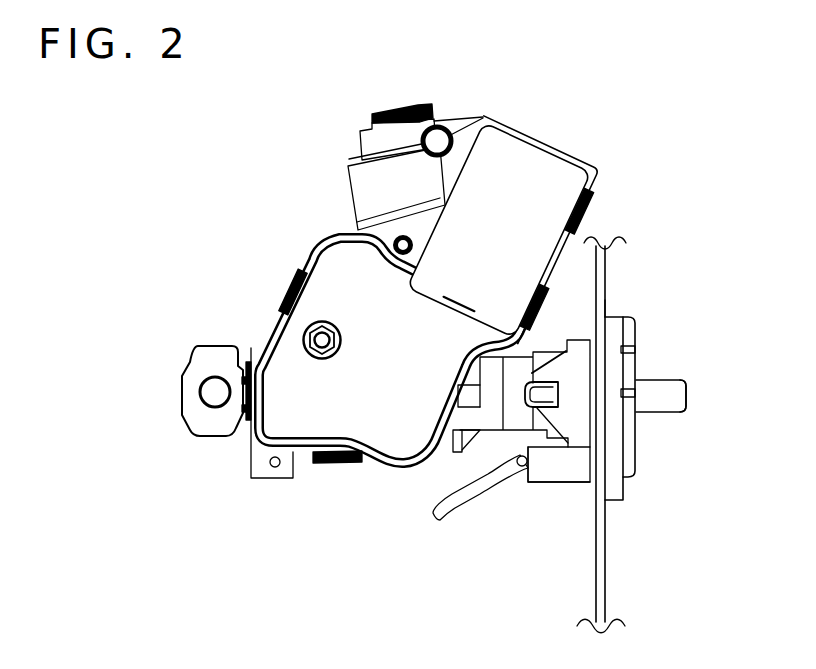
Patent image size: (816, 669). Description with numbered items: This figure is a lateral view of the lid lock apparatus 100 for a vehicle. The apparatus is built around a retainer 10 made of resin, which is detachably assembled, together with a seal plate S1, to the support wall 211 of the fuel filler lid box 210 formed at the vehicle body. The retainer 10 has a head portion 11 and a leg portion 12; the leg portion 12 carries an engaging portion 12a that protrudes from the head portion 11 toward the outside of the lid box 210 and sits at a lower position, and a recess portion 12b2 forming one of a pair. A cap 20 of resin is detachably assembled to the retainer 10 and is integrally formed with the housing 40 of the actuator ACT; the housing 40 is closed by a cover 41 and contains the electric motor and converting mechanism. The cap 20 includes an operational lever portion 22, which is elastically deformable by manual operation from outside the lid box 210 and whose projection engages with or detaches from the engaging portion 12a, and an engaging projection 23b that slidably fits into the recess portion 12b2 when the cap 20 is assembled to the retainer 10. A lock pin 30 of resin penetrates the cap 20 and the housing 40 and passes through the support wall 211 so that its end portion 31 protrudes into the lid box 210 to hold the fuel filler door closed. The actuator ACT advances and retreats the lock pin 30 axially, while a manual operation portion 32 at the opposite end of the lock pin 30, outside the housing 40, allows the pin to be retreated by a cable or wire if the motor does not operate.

The lid lock apparatus 100 is at (298, 234).
The actuator ACT is at (475, 206).
The cover 41 is at (568, 183).
The cap 20 is at (550, 347).
The seal plate S1 is at (610, 316).
The retainer 10 is at (638, 312).
The head portion 11 is at (619, 363).
The lock pin 30 is at (688, 371).
The end portion 31 is at (684, 396).
The leg portion 12 is at (585, 413).
The engaging projection 23b is at (522, 391).
The recess portion 12b2 is at (527, 400).
The engaging portion 12a is at (538, 482).
The operational lever portion 22 is at (446, 510).
The housing 40 is at (373, 465).
The manual operation portion 32 is at (182, 362).
The support wall 211 is at (603, 563).
The fuel filler lid box 210 is at (587, 596).